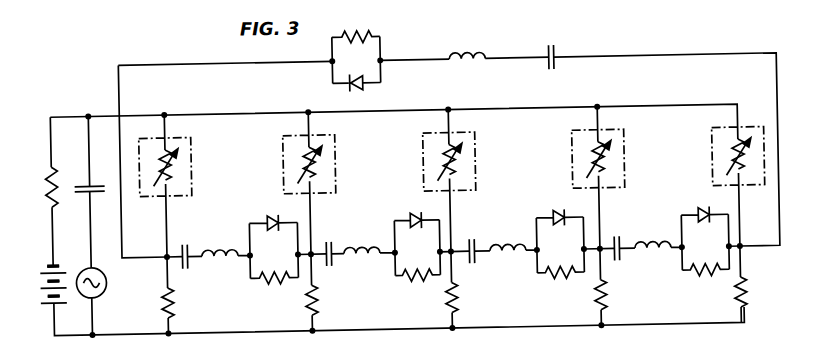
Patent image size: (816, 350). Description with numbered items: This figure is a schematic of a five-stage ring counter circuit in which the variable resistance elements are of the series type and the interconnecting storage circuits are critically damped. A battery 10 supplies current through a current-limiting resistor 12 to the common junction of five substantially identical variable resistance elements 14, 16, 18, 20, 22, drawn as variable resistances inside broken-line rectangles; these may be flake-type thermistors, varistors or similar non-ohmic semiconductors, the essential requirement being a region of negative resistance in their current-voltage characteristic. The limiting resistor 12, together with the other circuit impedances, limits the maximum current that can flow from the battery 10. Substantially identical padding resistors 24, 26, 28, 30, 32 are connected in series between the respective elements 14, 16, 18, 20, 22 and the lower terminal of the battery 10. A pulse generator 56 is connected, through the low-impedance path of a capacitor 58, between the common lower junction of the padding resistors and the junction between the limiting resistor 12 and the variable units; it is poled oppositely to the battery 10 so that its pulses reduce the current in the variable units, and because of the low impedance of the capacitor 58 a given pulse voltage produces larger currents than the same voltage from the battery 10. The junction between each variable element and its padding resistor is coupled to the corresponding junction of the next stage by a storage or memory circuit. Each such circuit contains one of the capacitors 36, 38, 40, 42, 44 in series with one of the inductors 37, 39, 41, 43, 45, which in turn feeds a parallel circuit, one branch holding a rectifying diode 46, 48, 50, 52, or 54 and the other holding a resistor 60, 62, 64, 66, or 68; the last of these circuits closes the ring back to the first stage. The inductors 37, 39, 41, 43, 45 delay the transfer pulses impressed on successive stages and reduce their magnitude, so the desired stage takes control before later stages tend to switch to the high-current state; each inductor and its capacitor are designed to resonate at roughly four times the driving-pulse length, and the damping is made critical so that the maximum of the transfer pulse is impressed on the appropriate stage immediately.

The battery 10 is at (50, 274).
The current-limiting resistor 12 is at (46, 186).
The variable resistance element 14 is at (195, 186).
The variable resistance element 16 is at (338, 190).
The variable resistance element 18 is at (478, 192).
The variable resistance element 20 is at (628, 190).
The variable resistance element 22 is at (714, 138).
The padding resistor 24 is at (175, 297).
The padding resistor 26 is at (318, 300).
The padding resistor 28 is at (458, 305).
The padding resistor 30 is at (605, 308).
The padding resistor 32 is at (746, 310).
The capacitor 36 is at (185, 243).
The inductor 37 is at (220, 250).
The capacitor 38 is at (331, 243).
The inductor 39 is at (362, 250).
The capacitor 40 is at (471, 243).
The inductor 41 is at (505, 250).
The capacitor 42 is at (618, 243).
The inductor 43 is at (653, 250).
The capacitor 44 is at (556, 50).
The inductor 45 is at (470, 54).
The rectifying diode 46 is at (270, 220).
The rectifying diode 48 is at (412, 220).
The rectifying diode 50 is at (555, 220).
The rectifying diode 52 is at (702, 218).
The rectifying diode 54 is at (368, 92).
The pulse generator 56 is at (106, 280).
The capacitor 58 is at (96, 184).
The resistor 60 is at (278, 287).
The resistor 62 is at (418, 287).
The resistor 64 is at (562, 287).
The resistor 66 is at (704, 287).
The resistor 68 is at (376, 36).